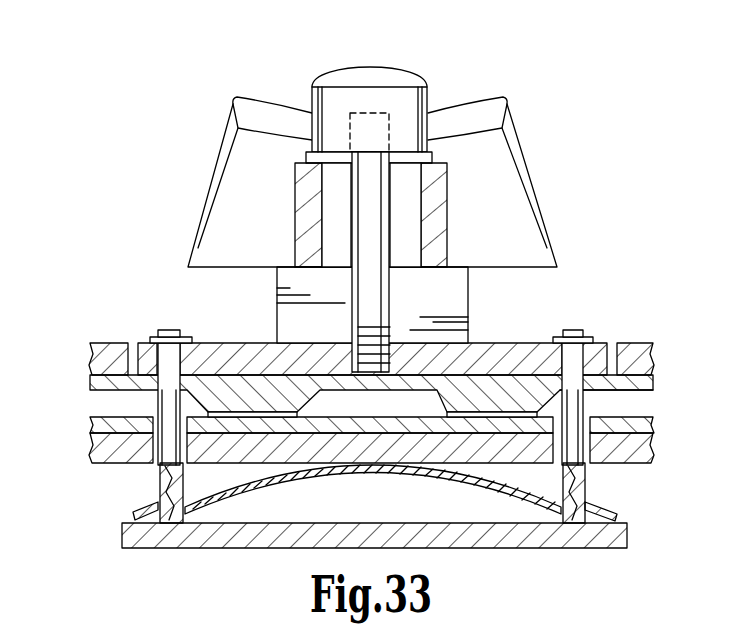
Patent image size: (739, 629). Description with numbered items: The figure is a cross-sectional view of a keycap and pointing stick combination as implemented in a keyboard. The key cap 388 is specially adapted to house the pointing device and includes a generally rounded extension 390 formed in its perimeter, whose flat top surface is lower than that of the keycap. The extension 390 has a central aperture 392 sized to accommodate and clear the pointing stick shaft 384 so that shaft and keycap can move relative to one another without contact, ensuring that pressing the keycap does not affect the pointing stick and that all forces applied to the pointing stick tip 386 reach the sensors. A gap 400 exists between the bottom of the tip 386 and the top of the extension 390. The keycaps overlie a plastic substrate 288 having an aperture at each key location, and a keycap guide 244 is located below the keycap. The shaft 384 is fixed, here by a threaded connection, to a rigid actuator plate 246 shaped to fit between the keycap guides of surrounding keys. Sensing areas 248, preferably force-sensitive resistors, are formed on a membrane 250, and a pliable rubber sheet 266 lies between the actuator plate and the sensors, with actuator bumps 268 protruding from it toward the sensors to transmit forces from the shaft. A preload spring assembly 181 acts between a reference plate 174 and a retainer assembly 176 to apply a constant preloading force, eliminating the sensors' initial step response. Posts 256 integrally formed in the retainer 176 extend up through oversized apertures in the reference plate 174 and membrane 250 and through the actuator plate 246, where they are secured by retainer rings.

The reference plate 174 is at (110, 463).
The retainer assembly 176 is at (472, 550).
The preload spring assembly 181 is at (593, 517).
The keycap guide 244 is at (277, 286).
The actuator plate 246 is at (210, 343).
The sensing areas 248 is at (253, 410).
The membrane 250 is at (118, 417).
The posts 256 is at (575, 330).
The pliable sheet 266 is at (633, 391).
The actuator bumps 268 is at (310, 402).
The plastic substrate 288 is at (103, 343).
The pointing stick shaft 384 is at (390, 327).
The pointing stick tip 386 is at (352, 67).
The key cap 388 is at (277, 97).
The rounded extension 390 is at (293, 233).
The central aperture 392 is at (403, 228).
The gap 400 is at (407, 160).